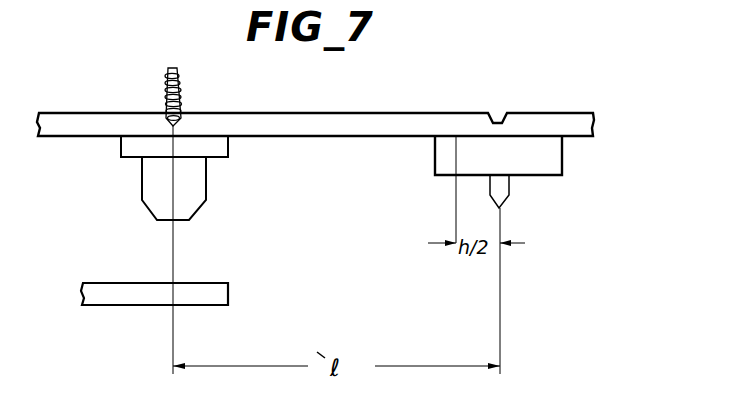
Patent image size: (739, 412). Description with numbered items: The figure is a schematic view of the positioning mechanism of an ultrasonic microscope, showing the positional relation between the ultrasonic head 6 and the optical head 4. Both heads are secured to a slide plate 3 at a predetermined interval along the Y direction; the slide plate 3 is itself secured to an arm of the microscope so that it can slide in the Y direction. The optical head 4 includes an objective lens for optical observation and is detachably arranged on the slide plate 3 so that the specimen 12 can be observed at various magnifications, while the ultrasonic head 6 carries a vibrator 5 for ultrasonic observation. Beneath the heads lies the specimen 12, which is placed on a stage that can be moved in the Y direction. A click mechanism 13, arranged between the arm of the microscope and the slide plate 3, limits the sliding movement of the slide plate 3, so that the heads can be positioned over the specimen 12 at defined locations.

The slide plate 3 is at (572, 112).
The optical head 4 is at (206, 175).
The vibrator 5 is at (562, 153).
The ultrasonic head 6 is at (509, 185).
The specimen 12 is at (227, 282).
The click mechanism 13 is at (183, 91).